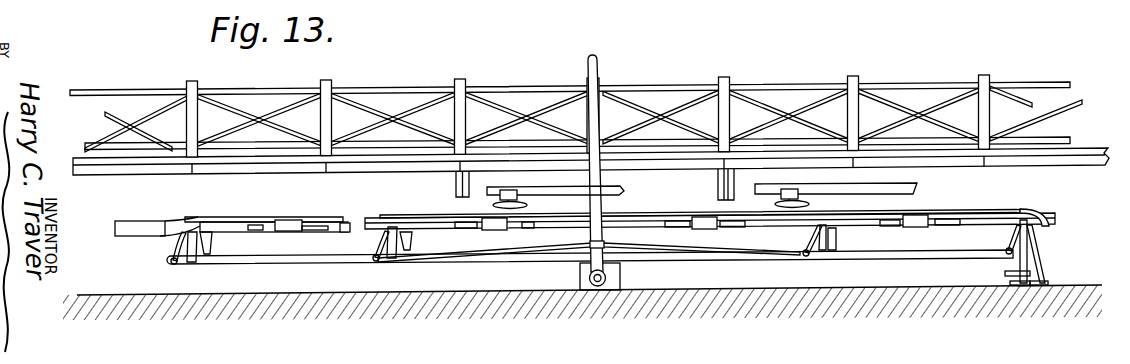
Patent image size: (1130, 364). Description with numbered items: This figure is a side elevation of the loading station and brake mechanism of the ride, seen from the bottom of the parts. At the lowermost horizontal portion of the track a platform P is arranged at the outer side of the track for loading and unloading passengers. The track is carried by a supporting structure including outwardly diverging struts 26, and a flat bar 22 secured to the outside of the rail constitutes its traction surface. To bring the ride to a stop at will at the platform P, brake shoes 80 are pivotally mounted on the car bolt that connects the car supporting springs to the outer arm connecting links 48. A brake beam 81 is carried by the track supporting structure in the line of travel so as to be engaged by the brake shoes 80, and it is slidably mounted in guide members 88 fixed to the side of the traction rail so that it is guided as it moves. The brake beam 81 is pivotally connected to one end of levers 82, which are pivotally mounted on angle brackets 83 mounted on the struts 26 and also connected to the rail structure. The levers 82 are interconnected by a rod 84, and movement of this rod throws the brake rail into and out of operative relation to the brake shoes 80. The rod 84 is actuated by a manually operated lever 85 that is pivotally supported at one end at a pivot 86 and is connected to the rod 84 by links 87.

The platform P is at (403, 168).
The manually operated lever 85 is at (598, 69).
The pivot of the manually operated lever 86 is at (604, 279).
The links 87 is at (530, 249).
The rod 84 is at (306, 263).
The guide members 88 is at (290, 224).
The brake beam 81 is at (966, 211).
The flat bar 22 is at (1040, 217).
The levers 82 is at (177, 242).
The angle brackets 83 is at (192, 257).
The struts 26 is at (208, 250).
The brake shoes 80 is at (518, 200).
The outer arm connecting links 48 is at (576, 194).